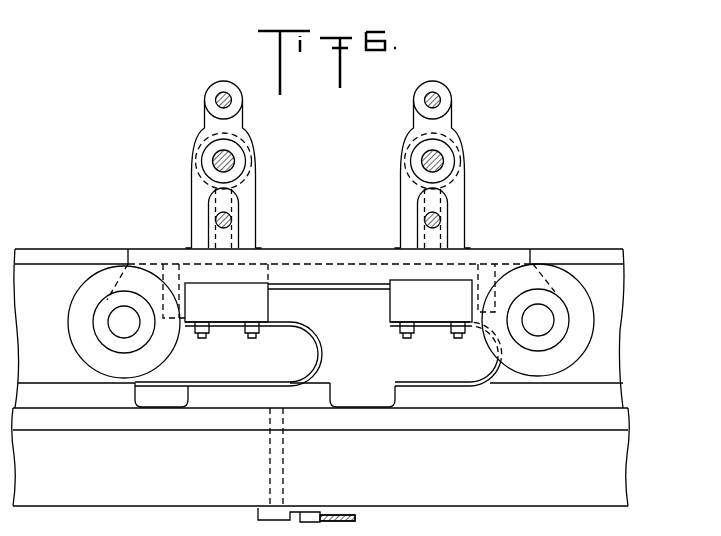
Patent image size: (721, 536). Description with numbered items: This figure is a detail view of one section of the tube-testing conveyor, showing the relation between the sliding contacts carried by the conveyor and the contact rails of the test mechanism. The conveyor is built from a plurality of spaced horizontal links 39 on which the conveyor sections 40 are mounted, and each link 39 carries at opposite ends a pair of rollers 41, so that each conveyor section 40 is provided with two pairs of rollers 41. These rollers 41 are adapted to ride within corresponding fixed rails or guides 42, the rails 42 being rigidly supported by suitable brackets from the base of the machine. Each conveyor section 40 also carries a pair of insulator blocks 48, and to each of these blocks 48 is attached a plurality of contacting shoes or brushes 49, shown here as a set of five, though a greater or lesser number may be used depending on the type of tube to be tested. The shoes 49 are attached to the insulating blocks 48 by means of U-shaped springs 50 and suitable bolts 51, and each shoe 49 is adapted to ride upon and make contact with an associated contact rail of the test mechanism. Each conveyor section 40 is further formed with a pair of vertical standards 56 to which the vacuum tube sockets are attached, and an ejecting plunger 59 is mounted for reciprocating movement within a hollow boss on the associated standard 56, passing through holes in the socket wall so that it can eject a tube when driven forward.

The horizontal link 39 is at (548, 323).
The conveyor section 40 is at (330, 249).
The roller 41 is at (585, 312).
The fixed rail 42 is at (620, 455).
The insulator block 48 is at (390, 298).
The contacting shoe 49 is at (385, 393).
The U-shaped spring 50 is at (302, 357).
The bolt 51 is at (207, 337).
The vertical standard 56 is at (452, 120).
The ejecting plunger 59 is at (430, 160).